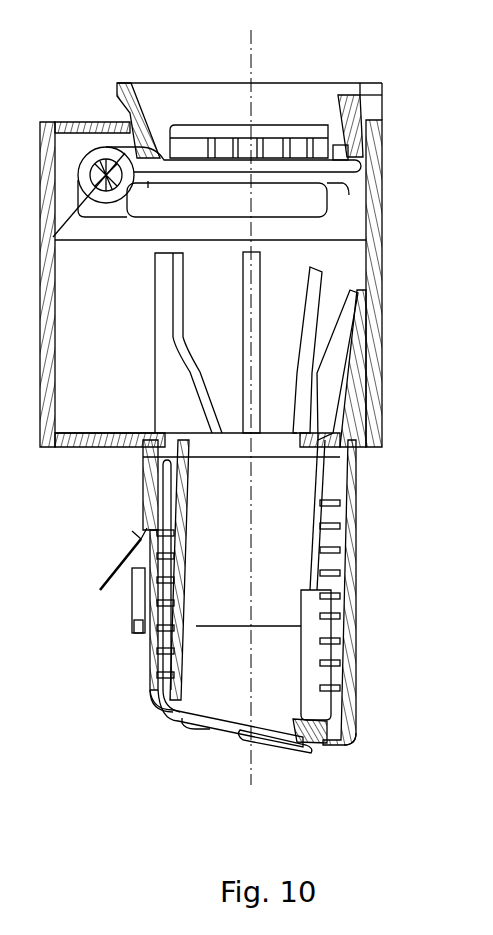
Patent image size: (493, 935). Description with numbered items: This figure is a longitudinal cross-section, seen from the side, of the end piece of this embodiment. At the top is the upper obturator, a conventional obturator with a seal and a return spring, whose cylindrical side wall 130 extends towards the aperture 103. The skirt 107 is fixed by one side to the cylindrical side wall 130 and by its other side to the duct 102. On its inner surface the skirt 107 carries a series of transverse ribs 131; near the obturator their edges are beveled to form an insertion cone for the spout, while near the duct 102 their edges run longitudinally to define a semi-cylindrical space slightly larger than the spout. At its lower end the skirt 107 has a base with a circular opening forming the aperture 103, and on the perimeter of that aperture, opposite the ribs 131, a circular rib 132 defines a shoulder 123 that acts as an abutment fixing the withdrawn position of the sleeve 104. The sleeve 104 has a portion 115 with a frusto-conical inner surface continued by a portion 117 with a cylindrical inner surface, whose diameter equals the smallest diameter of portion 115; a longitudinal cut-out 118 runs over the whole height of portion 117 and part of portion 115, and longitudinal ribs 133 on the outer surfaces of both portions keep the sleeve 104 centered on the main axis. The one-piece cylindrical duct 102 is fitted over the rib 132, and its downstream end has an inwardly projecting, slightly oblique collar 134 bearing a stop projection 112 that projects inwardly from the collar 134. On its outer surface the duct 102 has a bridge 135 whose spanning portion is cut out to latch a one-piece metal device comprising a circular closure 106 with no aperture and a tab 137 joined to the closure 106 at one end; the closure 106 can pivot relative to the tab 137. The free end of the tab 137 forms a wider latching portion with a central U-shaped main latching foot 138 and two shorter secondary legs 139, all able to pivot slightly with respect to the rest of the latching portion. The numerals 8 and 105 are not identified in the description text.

The contact insert 8 is at (302, 132).
The cylindrical side wall 130 is at (373, 181).
The skirt 107 is at (377, 284).
The ribs 131 is at (308, 290).
The aperture 103 is at (260, 447).
The circular rib 132 is at (162, 452).
The longitudinal ribs 133 is at (172, 493).
The main latching foot 138 is at (117, 566).
The bridge 135 is at (98, 596).
The secondary legs 139 is at (130, 597).
The tab 137 is at (148, 650).
The cylindrical portion 117 is at (153, 668).
The collar 134 is at (158, 712).
The closure 106 is at (217, 732).
The stop projection 112 is at (301, 742).
The shoulder 123 is at (323, 460).
The frusto-conical portion 115 is at (343, 492).
The sleeve 104 is at (336, 530).
The spring arm 105 is at (329, 594).
The duct 102 is at (364, 623).
The longitudinal cut-out 118 is at (338, 680).